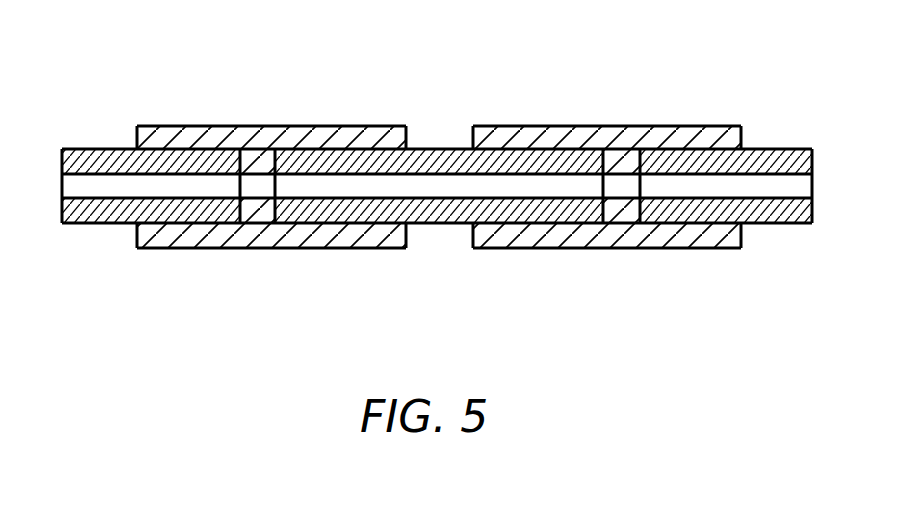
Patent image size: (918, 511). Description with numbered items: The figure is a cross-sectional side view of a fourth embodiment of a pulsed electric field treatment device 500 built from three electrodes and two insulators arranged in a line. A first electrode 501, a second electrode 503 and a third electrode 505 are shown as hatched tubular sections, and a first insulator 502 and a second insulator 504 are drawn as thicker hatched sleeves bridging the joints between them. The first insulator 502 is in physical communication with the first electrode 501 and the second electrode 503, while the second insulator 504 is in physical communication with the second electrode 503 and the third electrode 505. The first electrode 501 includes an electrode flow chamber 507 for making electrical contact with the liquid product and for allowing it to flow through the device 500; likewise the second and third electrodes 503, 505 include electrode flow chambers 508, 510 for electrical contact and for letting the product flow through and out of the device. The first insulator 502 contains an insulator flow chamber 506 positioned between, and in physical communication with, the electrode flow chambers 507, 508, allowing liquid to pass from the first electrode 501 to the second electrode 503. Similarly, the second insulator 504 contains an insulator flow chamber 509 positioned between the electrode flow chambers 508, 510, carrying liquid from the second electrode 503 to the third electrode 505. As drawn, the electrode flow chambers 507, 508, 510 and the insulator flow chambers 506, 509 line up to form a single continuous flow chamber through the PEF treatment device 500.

The pulsed electric field treatment device 500 is at (439, 193).
The first electrode 501 is at (91, 158).
The first insulator 502 is at (252, 138).
The second electrode 503 is at (440, 153).
The second insulator 504 is at (613, 138).
The third electrode 505 is at (797, 157).
The insulator flow chamber 506 is at (253, 185).
The electrode flow chamber 507 is at (95, 185).
The electrode flow chamber 508 is at (442, 185).
The insulator flow chamber 509 is at (620, 187).
The electrode flow chamber 510 is at (773, 186).